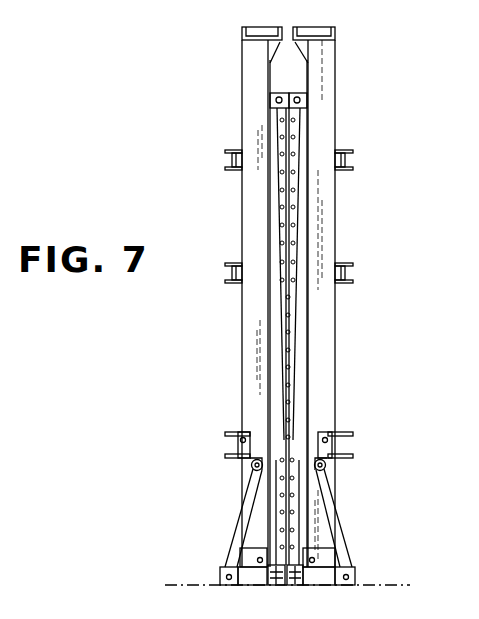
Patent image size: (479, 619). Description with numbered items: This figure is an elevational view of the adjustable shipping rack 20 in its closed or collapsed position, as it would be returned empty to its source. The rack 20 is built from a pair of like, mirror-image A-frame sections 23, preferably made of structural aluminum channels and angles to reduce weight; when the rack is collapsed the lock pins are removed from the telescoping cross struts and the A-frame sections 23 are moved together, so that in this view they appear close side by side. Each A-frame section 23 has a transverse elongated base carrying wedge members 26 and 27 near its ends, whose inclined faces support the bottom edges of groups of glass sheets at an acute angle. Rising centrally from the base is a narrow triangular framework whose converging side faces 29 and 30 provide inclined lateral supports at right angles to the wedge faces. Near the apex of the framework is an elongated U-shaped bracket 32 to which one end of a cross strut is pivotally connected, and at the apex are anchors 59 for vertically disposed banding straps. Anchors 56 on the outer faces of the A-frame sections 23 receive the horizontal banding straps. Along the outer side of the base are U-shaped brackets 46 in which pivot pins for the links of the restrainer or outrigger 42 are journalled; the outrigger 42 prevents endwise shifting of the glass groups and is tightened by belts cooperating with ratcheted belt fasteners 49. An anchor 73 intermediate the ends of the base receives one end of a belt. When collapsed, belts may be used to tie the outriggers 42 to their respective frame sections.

The adjustable shipping rack 20 is at (348, 112).
The anchor 59 is at (243, 31).
The U-shaped bracket 32 is at (275, 95).
The converging side face 30 is at (250, 303).
The converging side face 29 is at (324, 318).
The A-frame section 23 is at (240, 353).
The anchor 56 is at (228, 170).
The restrainer or outrigger 42 is at (228, 445).
The ratcheted belt fastener 49 is at (251, 468).
The wedge member 27 is at (248, 556).
The wedge member 26 is at (326, 548).
The U-shaped bracket 46 is at (220, 576).
The anchor 73 is at (275, 583).